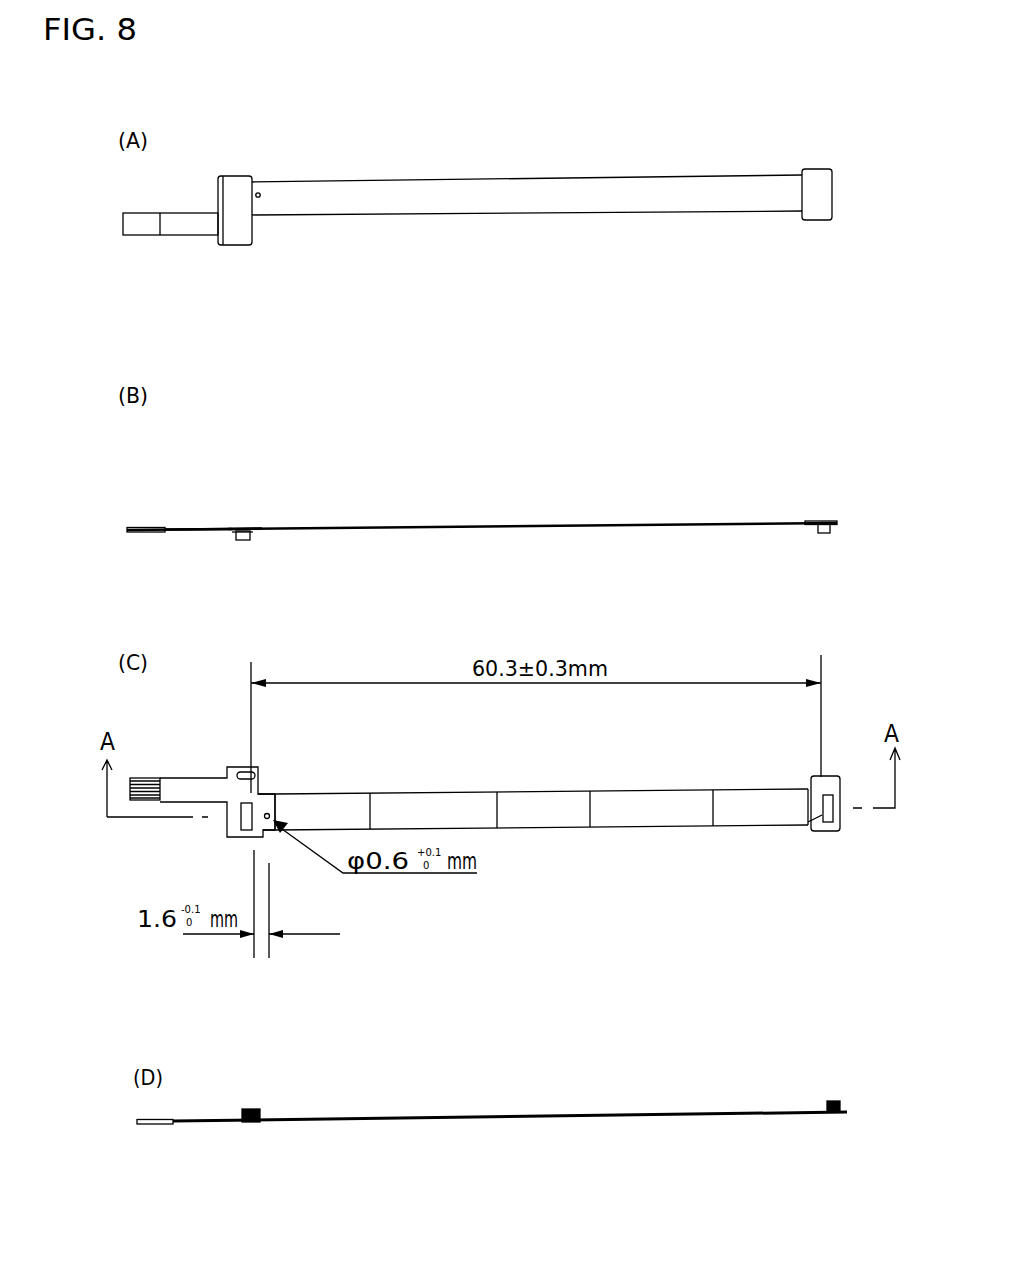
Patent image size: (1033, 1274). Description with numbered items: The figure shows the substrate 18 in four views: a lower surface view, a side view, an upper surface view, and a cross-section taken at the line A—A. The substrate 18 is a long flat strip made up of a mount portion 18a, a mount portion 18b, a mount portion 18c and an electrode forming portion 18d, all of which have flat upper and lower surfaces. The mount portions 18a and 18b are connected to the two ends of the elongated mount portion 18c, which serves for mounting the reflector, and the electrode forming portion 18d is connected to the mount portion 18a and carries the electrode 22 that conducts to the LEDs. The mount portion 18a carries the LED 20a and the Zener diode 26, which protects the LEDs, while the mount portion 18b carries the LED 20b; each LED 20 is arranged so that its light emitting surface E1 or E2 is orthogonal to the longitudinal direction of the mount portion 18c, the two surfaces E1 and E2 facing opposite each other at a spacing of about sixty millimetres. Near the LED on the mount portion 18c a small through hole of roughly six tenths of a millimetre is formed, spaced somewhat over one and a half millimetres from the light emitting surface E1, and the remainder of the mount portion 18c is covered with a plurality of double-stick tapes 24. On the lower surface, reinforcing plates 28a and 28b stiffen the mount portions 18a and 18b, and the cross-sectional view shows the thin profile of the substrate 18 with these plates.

The substrate 18 is at (490, 549).
The mount portion 18a is at (233, 838).
The mount portion 18b is at (815, 788).
The mount portion 18c is at (425, 202).
The electrode forming portion 18d is at (172, 222).
The LED 20 is at (590, 1092).
The LED 20a is at (246, 815).
The LED 20b is at (830, 823).
The electrode 22 is at (150, 527).
The double-stick tape 24 is at (327, 805).
The Zener diode 26 is at (243, 542).
The reinforcing plate 28a is at (236, 233).
The reinforcing plate 28b is at (817, 208).
The light emitting surface E1 is at (270, 822).
The light emitting surface E2 is at (822, 815).